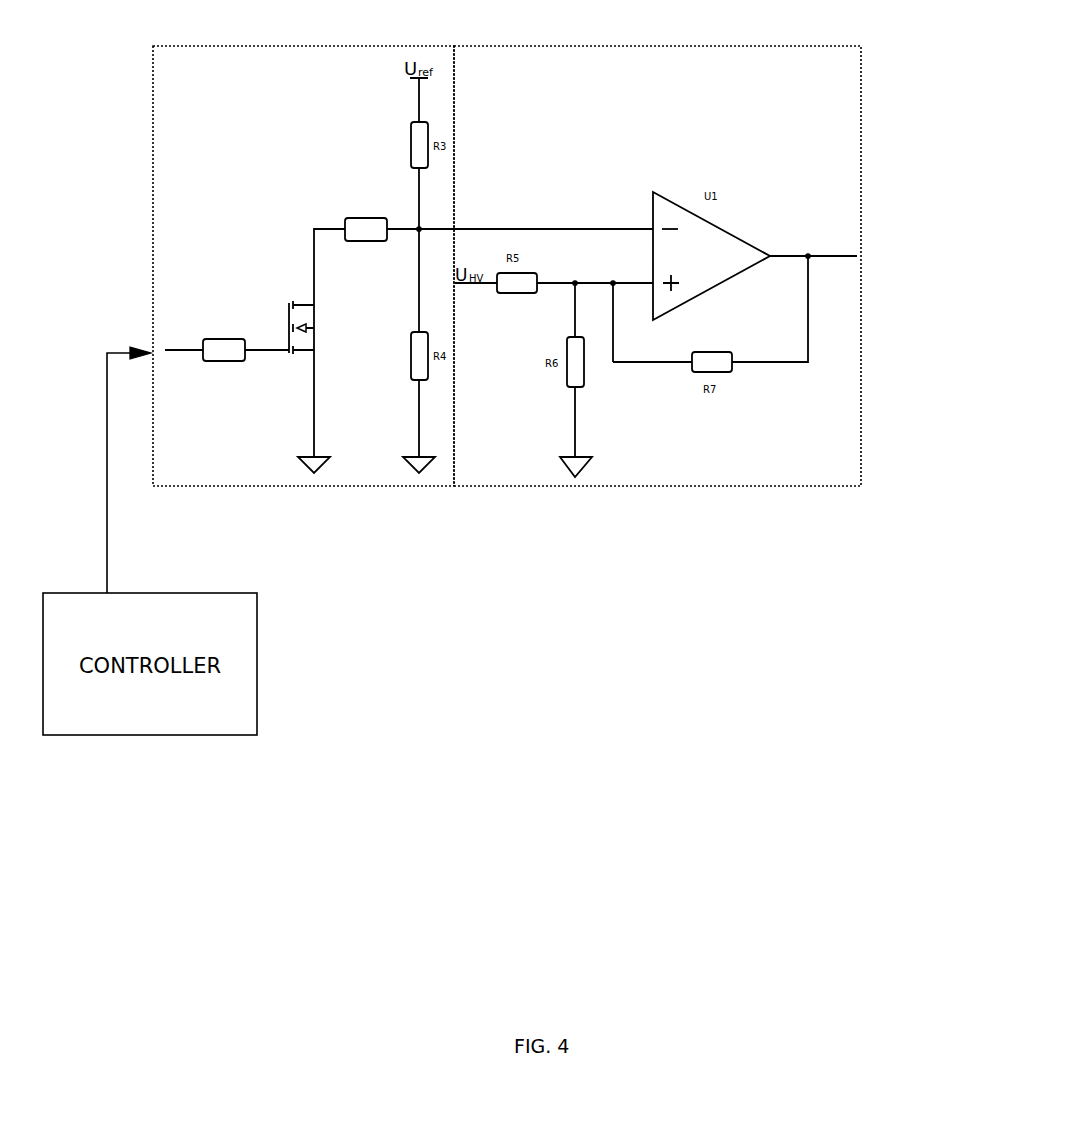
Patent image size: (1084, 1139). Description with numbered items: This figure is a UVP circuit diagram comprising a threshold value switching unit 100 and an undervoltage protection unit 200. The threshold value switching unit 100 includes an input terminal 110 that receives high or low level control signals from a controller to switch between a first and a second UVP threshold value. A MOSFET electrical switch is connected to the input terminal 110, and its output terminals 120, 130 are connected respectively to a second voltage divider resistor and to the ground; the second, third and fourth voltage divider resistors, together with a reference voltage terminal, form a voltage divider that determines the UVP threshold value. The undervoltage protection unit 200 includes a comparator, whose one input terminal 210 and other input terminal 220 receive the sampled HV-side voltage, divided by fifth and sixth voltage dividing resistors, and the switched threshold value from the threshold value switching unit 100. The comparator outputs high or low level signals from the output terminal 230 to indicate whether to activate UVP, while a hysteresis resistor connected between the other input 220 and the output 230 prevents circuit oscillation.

The threshold value switching unit 100 is at (150, 102).
The undervoltage protection unit 200 is at (862, 102).
The input terminal 110 is at (185, 345).
The output terminal 120 is at (312, 278).
The output terminal 130 is at (313, 382).
The input terminal 210 is at (633, 227).
The input terminal 220 is at (635, 285).
The output terminal 230 is at (790, 253).